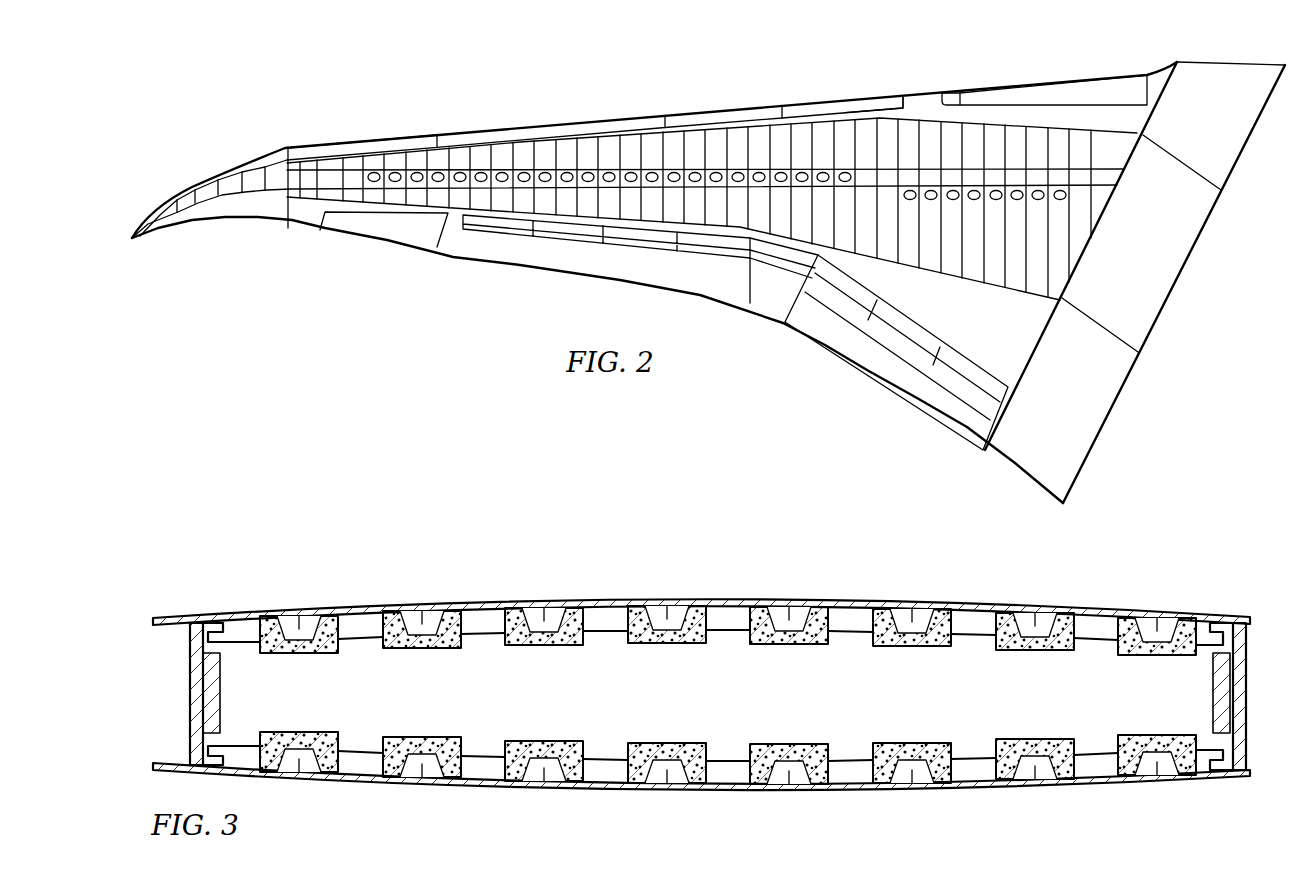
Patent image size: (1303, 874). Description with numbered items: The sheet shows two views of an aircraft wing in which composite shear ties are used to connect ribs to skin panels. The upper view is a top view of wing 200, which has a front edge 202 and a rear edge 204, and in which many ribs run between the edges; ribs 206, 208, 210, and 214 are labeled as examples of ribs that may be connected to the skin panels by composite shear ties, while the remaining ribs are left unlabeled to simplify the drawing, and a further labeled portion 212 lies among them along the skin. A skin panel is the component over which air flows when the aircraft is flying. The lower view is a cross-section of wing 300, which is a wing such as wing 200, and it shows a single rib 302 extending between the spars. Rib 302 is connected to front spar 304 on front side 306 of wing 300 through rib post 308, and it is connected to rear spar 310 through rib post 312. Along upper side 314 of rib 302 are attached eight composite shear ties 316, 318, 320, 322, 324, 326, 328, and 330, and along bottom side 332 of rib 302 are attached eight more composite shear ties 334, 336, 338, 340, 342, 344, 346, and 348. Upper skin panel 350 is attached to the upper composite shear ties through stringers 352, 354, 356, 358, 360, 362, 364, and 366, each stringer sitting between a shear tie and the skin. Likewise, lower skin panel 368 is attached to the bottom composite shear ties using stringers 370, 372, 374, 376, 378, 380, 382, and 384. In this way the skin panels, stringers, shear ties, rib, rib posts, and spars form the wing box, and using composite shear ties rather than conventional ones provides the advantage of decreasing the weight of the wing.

In FIG. 2, the wing 200 is at (385, 136).
In FIG. 2, the front edge 202 is at (515, 128).
In FIG. 2, the rear edge 204 is at (522, 265).
In FIG. 2, the rib 206 is at (563, 153).
In FIG. 2, the rib 208 is at (663, 150).
In FIG. 2, the rib 210 is at (750, 143).
In FIG. 2, the skin panel section 212 is at (853, 127).
In FIG. 2, the rib 214 is at (910, 122).
In FIG. 3, the wing 300 is at (489, 533).
In FIG. 3, the rib 302 is at (747, 680).
In FIG. 3, the front spar 304 is at (189, 678).
In FIG. 3, the front side 306 is at (168, 617).
In FIG. 3, the rib post 308 is at (221, 706).
In FIG. 3, the rear spar 310 is at (1252, 771).
In FIG. 3, the rib post 312 is at (1212, 705).
In FIG. 3, the upper side 314 is at (483, 632).
In FIG. 3, the composite shear tie 316 is at (293, 655).
In FIG. 3, the composite shear tie 318 is at (416, 650).
In FIG. 3, the composite shear tie 320 is at (538, 647).
In FIG. 3, the composite shear tie 322 is at (661, 645).
In FIG. 3, the composite shear tie 324 is at (783, 646).
In FIG. 3, the composite shear tie 326 is at (906, 648).
In FIG. 3, the composite shear tie 328 is at (1029, 652).
In FIG. 3, the composite shear tie 330 is at (1170, 656).
In FIG. 3, the bottom side 332 is at (483, 760).
In FIG. 3, the composite shear tie 334 is at (295, 733).
In FIG. 3, the composite shear tie 336 is at (418, 738).
In FIG. 3, the composite shear tie 338 is at (540, 742).
In FIG. 3, the composite shear tie 340 is at (663, 744).
In FIG. 3, the composite shear tie 342 is at (785, 745).
In FIG. 3, the composite shear tie 344 is at (908, 744).
In FIG. 3, the composite shear tie 346 is at (1031, 740).
In FIG. 3, the composite shear tie 348 is at (1153, 736).
In FIG. 3, the upper skin panel 350 is at (358, 604).
In FIG. 3, the stringer 352 is at (293, 625).
In FIG. 3, the stringer 354 is at (416, 620).
In FIG. 3, the stringer 356 is at (538, 617).
In FIG. 3, the stringer 358 is at (661, 615).
In FIG. 3, the stringer 360 is at (783, 616).
In FIG. 3, the stringer 362 is at (906, 618).
In FIG. 3, the stringer 364 is at (1029, 622).
In FIG. 3, the stringer 366 is at (1151, 627).
In FIG. 3, the lower skin panel 368 is at (358, 787).
In FIG. 3, the stringer 370 is at (295, 762).
In FIG. 3, the stringer 372 is at (418, 767).
In FIG. 3, the stringer 374 is at (540, 771).
In FIG. 3, the stringer 376 is at (663, 773).
In FIG. 3, the stringer 378 is at (785, 774).
In FIG. 3, the stringer 380 is at (908, 773).
In FIG. 3, the stringer 382 is at (1031, 769).
In FIG. 3, the stringer 384 is at (1153, 765).